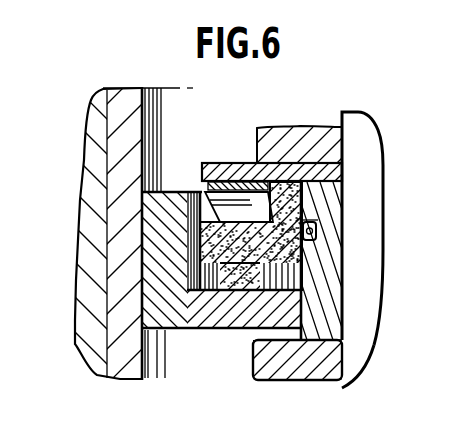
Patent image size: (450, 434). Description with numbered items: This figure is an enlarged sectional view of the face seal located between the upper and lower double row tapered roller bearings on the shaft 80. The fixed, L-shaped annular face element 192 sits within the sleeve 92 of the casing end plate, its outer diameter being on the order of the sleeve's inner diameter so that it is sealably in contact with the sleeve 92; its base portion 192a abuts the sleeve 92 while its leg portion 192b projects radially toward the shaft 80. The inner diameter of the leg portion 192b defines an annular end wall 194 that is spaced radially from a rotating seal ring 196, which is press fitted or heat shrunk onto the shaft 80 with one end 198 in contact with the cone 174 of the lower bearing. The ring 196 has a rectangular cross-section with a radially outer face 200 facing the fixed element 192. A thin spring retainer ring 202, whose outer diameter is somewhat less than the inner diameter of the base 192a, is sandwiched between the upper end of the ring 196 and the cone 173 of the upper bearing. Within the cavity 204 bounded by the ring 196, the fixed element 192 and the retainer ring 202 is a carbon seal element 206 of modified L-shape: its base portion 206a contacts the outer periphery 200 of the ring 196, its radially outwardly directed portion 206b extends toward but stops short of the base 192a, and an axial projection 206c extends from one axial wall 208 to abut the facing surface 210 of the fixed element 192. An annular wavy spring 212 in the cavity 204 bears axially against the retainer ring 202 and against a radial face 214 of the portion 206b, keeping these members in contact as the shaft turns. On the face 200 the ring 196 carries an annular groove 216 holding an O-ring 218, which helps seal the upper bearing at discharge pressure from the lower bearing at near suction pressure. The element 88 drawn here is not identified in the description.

The shaft 80 is at (365, 291).
The end member 88 is at (95, 142).
The sleeve 92 is at (130, 96).
The cone 173 is at (310, 127).
The cone 174 is at (325, 367).
The fixed annular face element 192 is at (172, 186).
The base portion 192a is at (157, 267).
The leg portion 192b is at (162, 380).
The annular end wall 194 is at (298, 357).
The seal ring 196 is at (373, 305).
The end 198 is at (350, 380).
The radially outer face 200 is at (325, 320).
The spring retainer ring 202 is at (240, 182).
The cavity 204 is at (207, 193).
The carbon seal element 206 is at (304, 204).
The base portion 206a is at (322, 325).
The radially outwardly directed portion 206b is at (200, 236).
The axial projection 206c is at (235, 315).
The axial wall 208 is at (180, 288).
The facing surface 210 is at (262, 312).
The wavy spring 212 is at (247, 162).
The radial face 214 is at (208, 208).
The annular groove 216 is at (310, 268).
The O-ring 218 is at (316, 228).